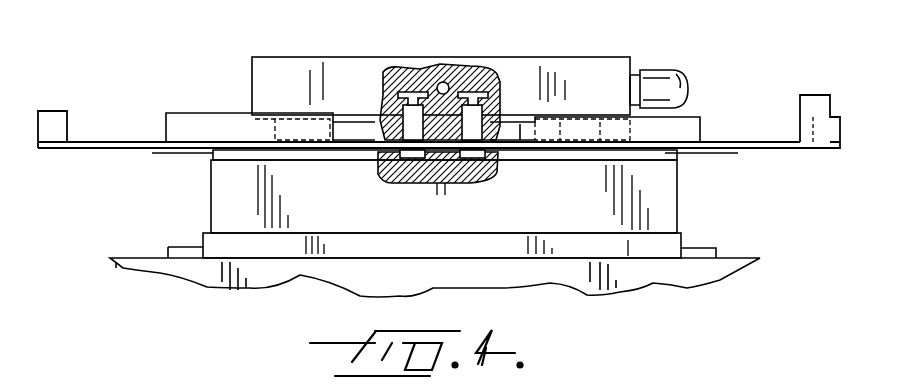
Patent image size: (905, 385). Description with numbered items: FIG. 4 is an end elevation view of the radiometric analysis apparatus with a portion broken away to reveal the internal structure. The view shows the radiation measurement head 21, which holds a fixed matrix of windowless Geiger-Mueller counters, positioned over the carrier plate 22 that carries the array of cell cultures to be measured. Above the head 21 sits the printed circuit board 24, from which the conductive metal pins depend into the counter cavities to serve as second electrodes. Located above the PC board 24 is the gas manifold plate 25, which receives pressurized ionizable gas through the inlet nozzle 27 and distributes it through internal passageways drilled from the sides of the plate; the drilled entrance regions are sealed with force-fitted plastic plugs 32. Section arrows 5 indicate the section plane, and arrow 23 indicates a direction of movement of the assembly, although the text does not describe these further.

The section line 5- 5 is at (726, 190).
The radiation measurement head 21 is at (661, 192).
The carrier plate 22 is at (665, 247).
The direction of movement 23 is at (700, 208).
The printed circuit board 24 is at (790, 152).
The gas manifold plate 25 is at (566, 57).
The inlet nozzle 27 is at (662, 70).
The plug 32 is at (395, 131).